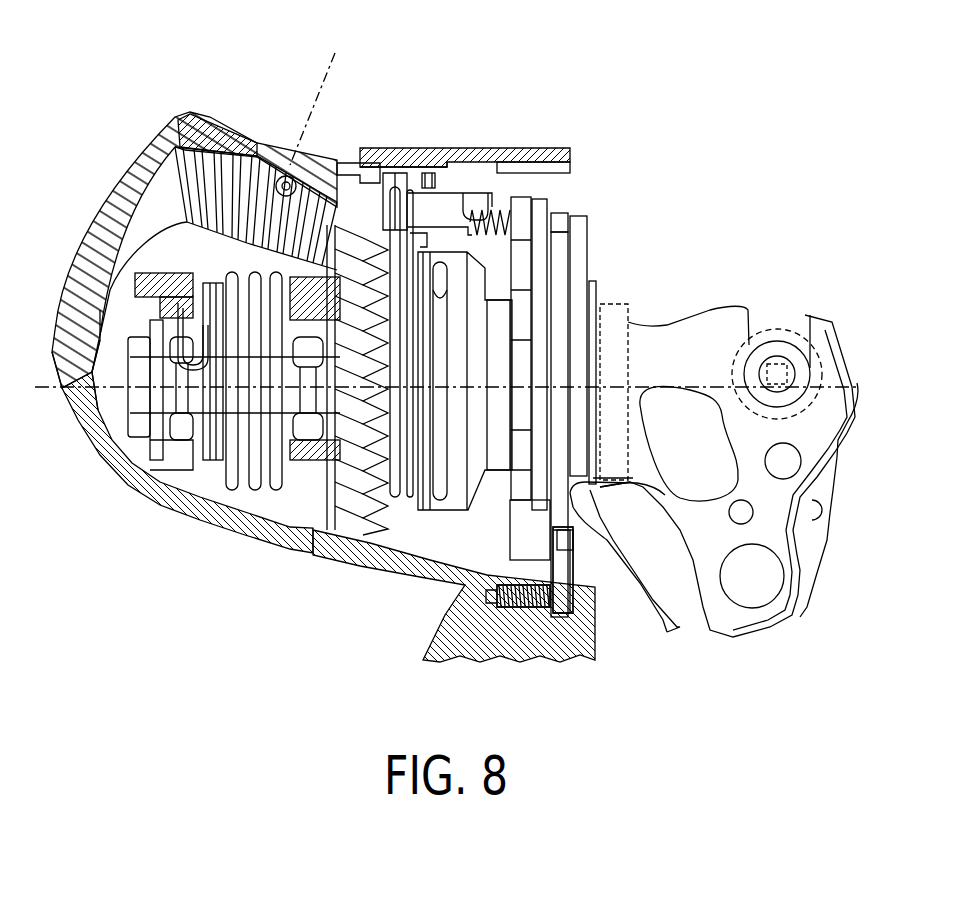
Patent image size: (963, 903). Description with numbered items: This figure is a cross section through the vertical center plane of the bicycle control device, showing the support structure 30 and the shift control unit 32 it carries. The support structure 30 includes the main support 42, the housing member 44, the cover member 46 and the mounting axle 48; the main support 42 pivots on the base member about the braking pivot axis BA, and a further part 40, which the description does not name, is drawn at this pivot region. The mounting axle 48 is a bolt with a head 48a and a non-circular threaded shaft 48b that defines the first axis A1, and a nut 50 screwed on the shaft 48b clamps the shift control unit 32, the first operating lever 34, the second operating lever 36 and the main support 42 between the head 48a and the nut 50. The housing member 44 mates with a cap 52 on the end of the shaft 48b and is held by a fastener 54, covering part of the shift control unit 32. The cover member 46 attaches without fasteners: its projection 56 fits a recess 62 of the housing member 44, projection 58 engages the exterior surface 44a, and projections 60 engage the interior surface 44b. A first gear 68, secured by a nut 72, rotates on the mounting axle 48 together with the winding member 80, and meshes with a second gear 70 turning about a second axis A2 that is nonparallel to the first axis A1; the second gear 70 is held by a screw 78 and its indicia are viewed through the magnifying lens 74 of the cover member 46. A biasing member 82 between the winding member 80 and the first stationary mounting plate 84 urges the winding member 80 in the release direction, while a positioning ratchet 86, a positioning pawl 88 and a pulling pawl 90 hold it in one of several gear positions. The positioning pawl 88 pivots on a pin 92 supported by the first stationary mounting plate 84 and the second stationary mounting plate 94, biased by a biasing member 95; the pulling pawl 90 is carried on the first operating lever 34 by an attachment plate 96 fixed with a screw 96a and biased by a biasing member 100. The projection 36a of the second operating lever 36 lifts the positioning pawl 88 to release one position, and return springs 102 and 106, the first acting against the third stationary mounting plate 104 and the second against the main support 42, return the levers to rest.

The support structure 30 is at (101, 478).
The shift control unit 32 is at (642, 209).
The first operating lever 34 is at (480, 647).
The second operating lever 36 is at (658, 630).
The projection 36a is at (583, 238).
The pivot bearing 40 is at (780, 333).
The main support 42 is at (733, 307).
The housing member 44 is at (128, 491).
The exterior surface 44a is at (403, 148).
The interior surface 44b is at (433, 150).
The cover member 46 is at (117, 167).
The mounting axle 48 is at (110, 442).
The head 48a is at (632, 363).
The shaft 48b is at (173, 470).
The nut 50 is at (187, 427).
The cap 52 is at (133, 327).
The fastener 54 is at (450, 140).
The projection 56 is at (60, 363).
The projection 58 is at (390, 167).
The projections 60 is at (350, 185).
The recess 62 is at (100, 403).
The first gear 68 is at (342, 518).
The second gear 70 is at (210, 172).
The nut 72 is at (302, 428).
The magnifying lens 74 is at (202, 118).
The screw 78 is at (285, 176).
The winding member 80 is at (453, 517).
The biasing member 82 is at (410, 503).
The first stationary mounting plate 84 is at (400, 483).
The positioning ratchet 86 is at (512, 482).
The positioning pawl 88 is at (527, 200).
The pulling pawl 90 is at (500, 608).
The pin 92 is at (563, 220).
The second stationary mounting plate 94 is at (550, 205).
The biasing member 95 is at (503, 200).
The attachment plate 96 is at (600, 578).
The screw 96a is at (537, 647).
The biasing member 100 is at (583, 563).
The biasing member 102 is at (140, 333).
The third stationary mounting plate 104 is at (217, 483).
The biasing member 106 is at (590, 270).
The first axis A1 is at (857, 383).
The second axis A2 is at (328, 70).
The braking pivot axis BA is at (750, 577).